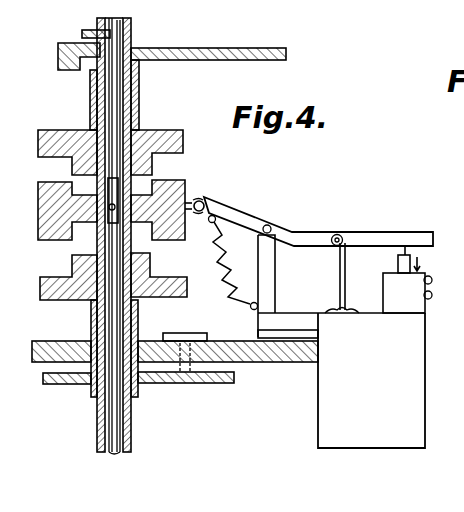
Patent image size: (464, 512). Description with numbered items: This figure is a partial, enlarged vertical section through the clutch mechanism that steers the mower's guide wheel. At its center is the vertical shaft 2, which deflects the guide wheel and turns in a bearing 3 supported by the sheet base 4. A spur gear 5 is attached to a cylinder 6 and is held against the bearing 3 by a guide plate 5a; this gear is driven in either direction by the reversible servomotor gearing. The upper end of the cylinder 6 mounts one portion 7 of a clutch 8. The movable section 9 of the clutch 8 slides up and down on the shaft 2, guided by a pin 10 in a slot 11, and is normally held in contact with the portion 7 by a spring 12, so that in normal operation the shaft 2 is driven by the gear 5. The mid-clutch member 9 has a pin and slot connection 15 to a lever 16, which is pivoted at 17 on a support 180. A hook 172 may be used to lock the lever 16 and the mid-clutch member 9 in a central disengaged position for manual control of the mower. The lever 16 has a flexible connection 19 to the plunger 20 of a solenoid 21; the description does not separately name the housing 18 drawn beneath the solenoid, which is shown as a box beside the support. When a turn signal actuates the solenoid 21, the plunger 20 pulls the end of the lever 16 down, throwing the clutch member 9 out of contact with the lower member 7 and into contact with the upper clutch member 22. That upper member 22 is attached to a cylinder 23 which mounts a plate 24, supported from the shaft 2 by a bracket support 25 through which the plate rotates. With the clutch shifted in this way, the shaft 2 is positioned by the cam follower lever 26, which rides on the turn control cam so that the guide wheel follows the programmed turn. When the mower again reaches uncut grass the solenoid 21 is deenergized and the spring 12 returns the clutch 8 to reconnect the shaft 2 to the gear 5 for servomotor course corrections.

The shaft 2 is at (115, 405).
The bearing 3 is at (95, 396).
The sheet base 4 is at (78, 386).
The spur gear 5 is at (262, 360).
The guide plate 5a is at (187, 334).
The cylinder 6 is at (138, 330).
The lower clutch portion 7 is at (142, 294).
The clutch 8 is at (70, 246).
The movable clutch section 9 is at (201, 202).
The pin 10 is at (134, 226).
The slot 11 is at (114, 204).
The spring 12 is at (228, 263).
The pin and slot connection 15 is at (228, 210).
The lever 16 is at (264, 225).
The pivot 17 is at (336, 234).
The hook 172 is at (341, 242).
The support 180 is at (276, 281).
The housing box 18 is at (425, 361).
The flexible connection 19 is at (407, 254).
The plunger 20 is at (396, 266).
The solenoid 21 is at (385, 299).
The upper clutch member 22 is at (50, 130).
The cylinder 23 is at (141, 100).
The plate 24 is at (141, 61).
The bracket support 25 is at (58, 48).
The cam follower lever 26 is at (204, 49).